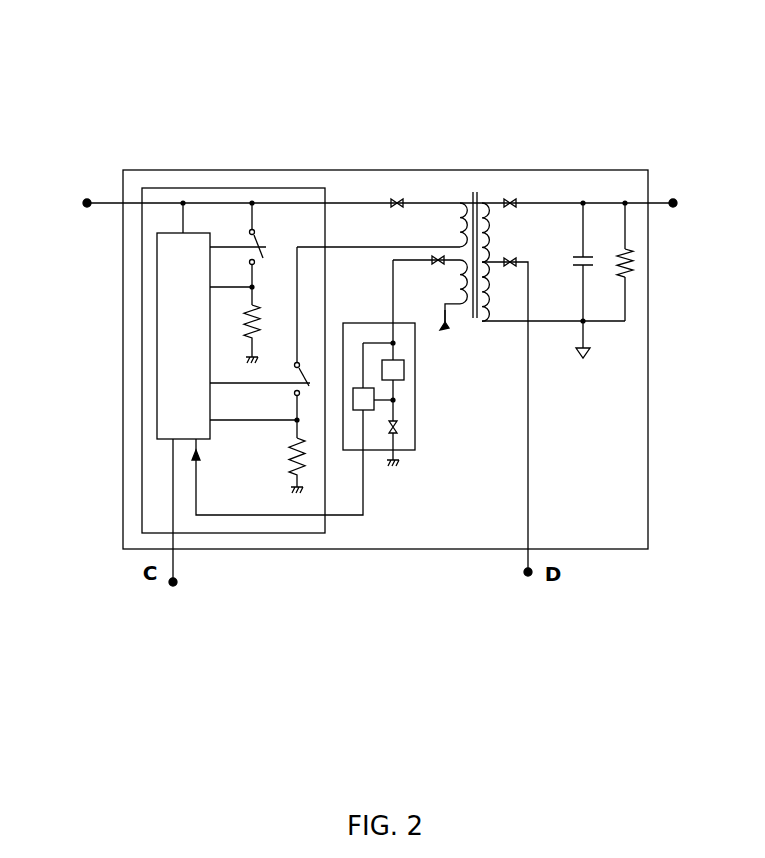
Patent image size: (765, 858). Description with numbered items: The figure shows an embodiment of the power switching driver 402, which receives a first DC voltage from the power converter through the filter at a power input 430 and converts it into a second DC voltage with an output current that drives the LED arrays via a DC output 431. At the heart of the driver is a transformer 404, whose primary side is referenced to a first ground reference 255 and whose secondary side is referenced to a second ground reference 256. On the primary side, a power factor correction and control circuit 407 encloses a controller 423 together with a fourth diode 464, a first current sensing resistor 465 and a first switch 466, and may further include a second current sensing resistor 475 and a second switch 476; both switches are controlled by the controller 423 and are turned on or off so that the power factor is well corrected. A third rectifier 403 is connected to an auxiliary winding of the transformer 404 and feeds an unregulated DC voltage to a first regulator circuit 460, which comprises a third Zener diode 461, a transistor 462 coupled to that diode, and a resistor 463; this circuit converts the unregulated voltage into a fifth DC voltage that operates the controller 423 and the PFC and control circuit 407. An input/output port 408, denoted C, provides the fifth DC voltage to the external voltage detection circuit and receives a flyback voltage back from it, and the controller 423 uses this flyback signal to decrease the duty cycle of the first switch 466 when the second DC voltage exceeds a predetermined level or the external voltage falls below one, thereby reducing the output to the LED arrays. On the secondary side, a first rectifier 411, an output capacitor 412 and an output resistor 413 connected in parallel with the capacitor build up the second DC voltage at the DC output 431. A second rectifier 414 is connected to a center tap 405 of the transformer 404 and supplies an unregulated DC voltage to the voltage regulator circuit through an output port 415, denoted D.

The power switching driver 402 is at (244, 170).
The third rectifier 403 is at (440, 255).
The transformer 404 is at (478, 195).
The center tap 405 is at (490, 260).
The power factor correction (PFC) and control circuit 407 is at (141, 293).
The input/output port 408 is at (170, 585).
The first rectifier 411 is at (512, 199).
The output capacitor 412 is at (592, 272).
The output resistor 413 is at (632, 268).
The second rectifier 414 is at (508, 268).
The output port 415 is at (531, 575).
The controller 423 is at (156, 363).
The power input 430 is at (85, 199).
The DC output 431 is at (671, 199).
The first regulator circuit 460 is at (417, 452).
The third Zener diode 461 is at (395, 432).
The transistor 462 is at (366, 416).
The resistor 463 is at (405, 372).
The fourth diode 464 is at (398, 198).
The first at least one current sensing resistor 465 is at (258, 305).
The first switch 466 is at (260, 246).
The second at least one current sensing resistor 475 is at (290, 462).
The second switch 476 is at (294, 391).
The first ground reference 255 is at (446, 328).
The second ground reference 256 is at (584, 360).